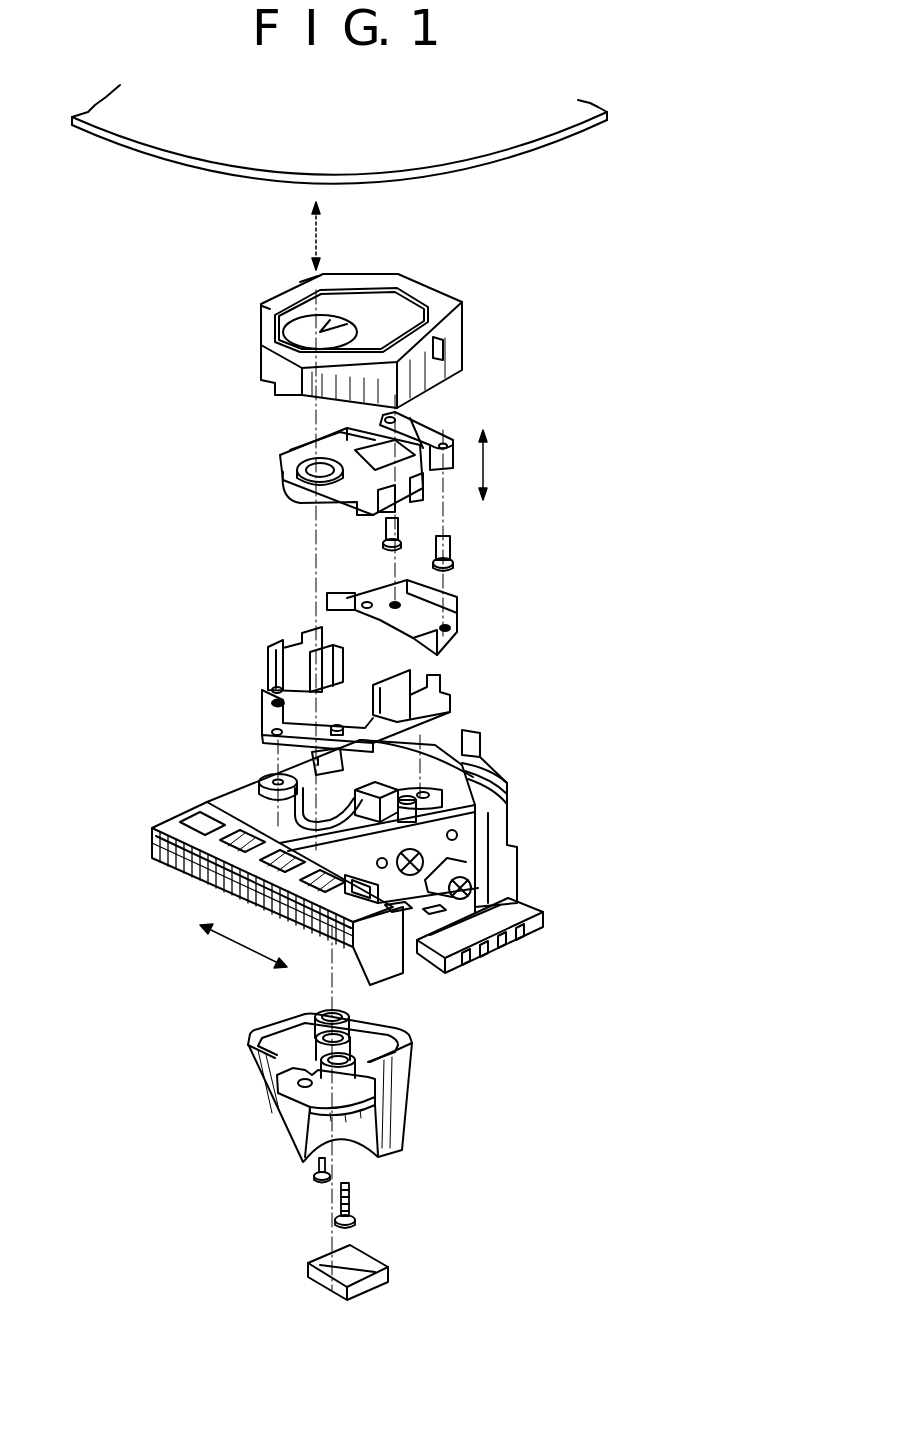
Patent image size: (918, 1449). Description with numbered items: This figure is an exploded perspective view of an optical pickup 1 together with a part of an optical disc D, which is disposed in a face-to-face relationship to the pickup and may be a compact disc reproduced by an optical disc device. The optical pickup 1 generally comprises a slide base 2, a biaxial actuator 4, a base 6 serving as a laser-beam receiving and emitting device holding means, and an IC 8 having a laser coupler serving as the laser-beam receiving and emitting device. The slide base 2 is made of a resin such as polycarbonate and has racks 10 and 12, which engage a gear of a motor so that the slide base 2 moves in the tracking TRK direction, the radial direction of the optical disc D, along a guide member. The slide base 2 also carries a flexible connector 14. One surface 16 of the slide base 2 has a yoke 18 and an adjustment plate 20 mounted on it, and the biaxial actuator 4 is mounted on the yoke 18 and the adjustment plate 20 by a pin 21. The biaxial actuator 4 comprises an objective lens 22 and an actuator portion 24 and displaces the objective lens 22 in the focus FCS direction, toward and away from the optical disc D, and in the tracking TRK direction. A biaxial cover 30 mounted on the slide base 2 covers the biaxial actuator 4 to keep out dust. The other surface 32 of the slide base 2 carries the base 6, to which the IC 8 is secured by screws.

The optical pickup 1 is at (215, 680).
The slide base 2 is at (341, 878).
The biaxial actuator 4 is at (347, 465).
The base 6 is at (273, 1105).
The IC 8 is at (323, 1283).
The rack 10 is at (155, 858).
The rack 12 is at (200, 877).
The flexible connector 14 is at (490, 912).
The one surface 16 is at (453, 787).
The yoke 18 is at (272, 658).
The adjustment plate 20 is at (430, 610).
The pin 21 is at (385, 525).
The objective lens 22 is at (283, 463).
The actuator portion 24 is at (387, 421).
The biaxial cover 30 is at (445, 317).
The other surface 32 is at (343, 968).
The optical disc D is at (187, 142).
The focus direction FCS is at (487, 462).
The tracking direction TRK is at (220, 947).